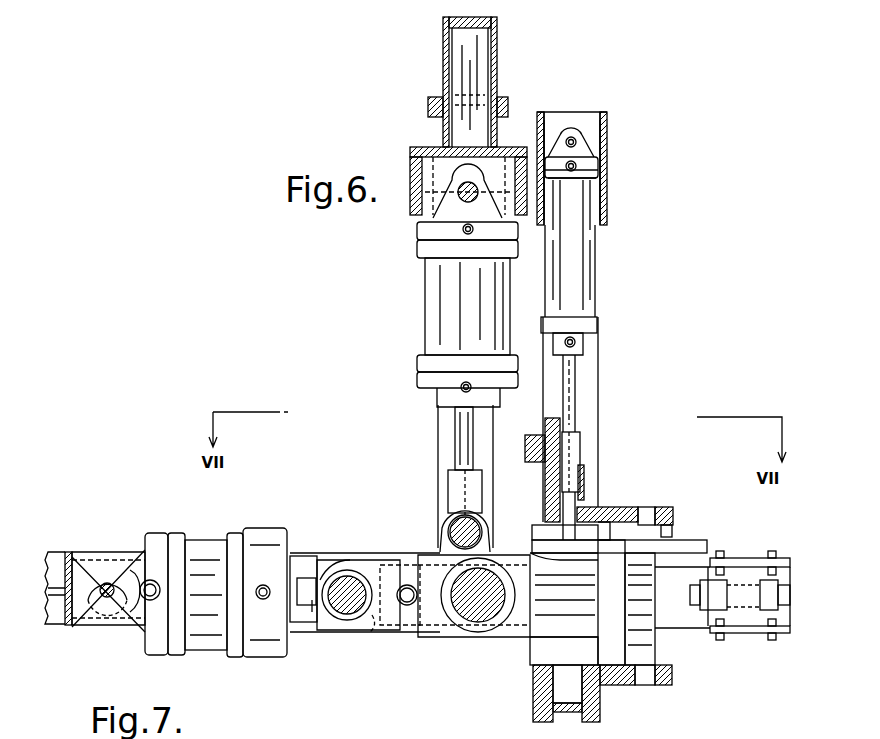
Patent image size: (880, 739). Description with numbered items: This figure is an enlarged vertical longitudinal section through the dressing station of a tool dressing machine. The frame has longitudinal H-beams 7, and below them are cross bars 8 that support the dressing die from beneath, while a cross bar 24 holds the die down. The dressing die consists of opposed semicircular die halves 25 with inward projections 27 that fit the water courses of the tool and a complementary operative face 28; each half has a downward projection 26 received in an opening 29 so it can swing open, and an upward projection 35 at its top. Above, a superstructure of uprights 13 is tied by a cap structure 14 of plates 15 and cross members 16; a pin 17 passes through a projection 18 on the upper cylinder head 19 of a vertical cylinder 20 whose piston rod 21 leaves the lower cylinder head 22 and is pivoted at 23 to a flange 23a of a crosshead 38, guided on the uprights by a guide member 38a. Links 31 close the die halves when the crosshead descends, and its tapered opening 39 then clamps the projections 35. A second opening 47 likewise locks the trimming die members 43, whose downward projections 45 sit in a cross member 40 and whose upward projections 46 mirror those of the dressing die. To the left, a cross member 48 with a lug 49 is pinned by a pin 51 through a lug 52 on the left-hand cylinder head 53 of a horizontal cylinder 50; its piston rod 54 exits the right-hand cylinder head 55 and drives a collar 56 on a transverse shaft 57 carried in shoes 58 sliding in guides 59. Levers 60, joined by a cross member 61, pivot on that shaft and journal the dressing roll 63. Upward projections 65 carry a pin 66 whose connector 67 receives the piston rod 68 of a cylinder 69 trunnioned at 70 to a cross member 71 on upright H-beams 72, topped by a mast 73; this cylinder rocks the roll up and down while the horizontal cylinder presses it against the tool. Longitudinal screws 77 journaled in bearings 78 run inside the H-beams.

The mast 73 is at (443, 60).
The cross member 71 is at (410, 168).
The trunnion 70 is at (460, 196).
The cylinder 69 is at (450, 306).
The upright H-beams 72 is at (438, 421).
The piston rod 68 is at (462, 432).
The connector 67 is at (480, 492).
The pin 66 is at (478, 536).
The upward projection 65 is at (443, 522).
The cap structure 14 is at (607, 125).
The plates 15 is at (545, 112).
The cross members 16 is at (570, 115).
The pin 17 is at (585, 140).
The projection 18 is at (590, 158).
The upper cylinder head 19 is at (583, 182).
The cylinder 20 is at (580, 262).
The lower cylinder head 22 is at (590, 320).
The uprights 13 is at (585, 363).
The piston rod 21 is at (575, 395).
The cross bar 24 is at (553, 418).
The guide member 38a is at (533, 440).
The flange 23a is at (585, 440).
The pivot 23 is at (583, 470).
The opening 39 is at (605, 510).
The links 31 is at (617, 532).
The upward projections 46 is at (648, 512).
The crosshead 38 is at (670, 510).
The second opening 47 is at (675, 530).
The upward projection 35 is at (565, 515).
The H-beams 7 is at (58, 552).
The cross member 48 is at (70, 610).
The lug 49 is at (85, 565).
The pin 51 is at (107, 583).
The lug 52 is at (123, 615).
The left-hand cylinder head 53 is at (147, 535).
The cylinder 50 is at (202, 545).
The right-hand cylinder head 55 is at (260, 540).
The piston rod 54 is at (303, 590).
The guides 59 is at (320, 560).
The shaft 57 is at (347, 585).
The cross member 61 is at (407, 588).
The collar 56 is at (312, 605).
The shoes 58 is at (370, 637).
The levers 60 is at (420, 640).
The dressing roll 63 is at (455, 628).
The inward projections 27 is at (545, 598).
The operative face 28 is at (540, 620).
The die halves 25 is at (545, 645).
The downward projection 26 is at (560, 672).
The cross bars 8 is at (535, 710).
The opening 29 is at (605, 690).
The cross member 40 is at (650, 680).
The downward projections 45 is at (650, 690).
The trimming die members 43 is at (655, 628).
The bearings 78 is at (740, 620).
The screws 77 is at (783, 625).